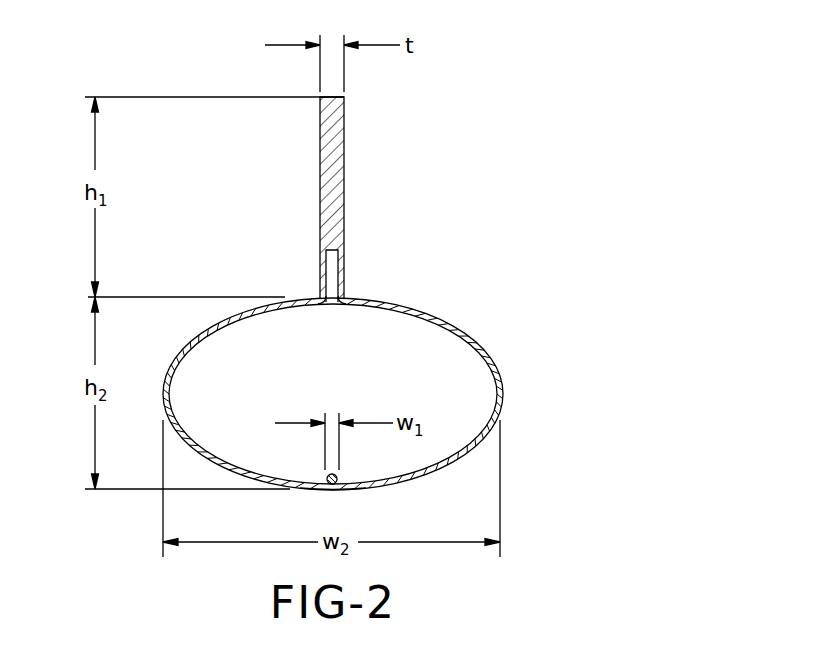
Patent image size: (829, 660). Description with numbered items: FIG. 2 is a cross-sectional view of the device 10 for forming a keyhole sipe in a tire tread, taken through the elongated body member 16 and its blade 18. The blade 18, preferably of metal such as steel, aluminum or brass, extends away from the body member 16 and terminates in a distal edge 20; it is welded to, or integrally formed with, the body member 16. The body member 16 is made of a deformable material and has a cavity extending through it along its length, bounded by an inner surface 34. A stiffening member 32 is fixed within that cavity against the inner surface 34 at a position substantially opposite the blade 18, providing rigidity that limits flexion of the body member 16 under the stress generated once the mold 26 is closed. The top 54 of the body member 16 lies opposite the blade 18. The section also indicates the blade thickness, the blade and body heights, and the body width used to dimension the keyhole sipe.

The device 10 is at (506, 262).
The body member 16 is at (491, 352).
The blade 18 is at (345, 182).
The edge 20 is at (338, 95).
The mold 26 is at (292, 364).
The stiffening member 32 is at (328, 474).
The inner surface 34 is at (466, 340).
The top 54 is at (350, 491).